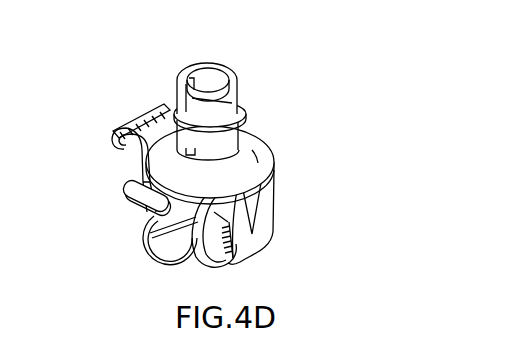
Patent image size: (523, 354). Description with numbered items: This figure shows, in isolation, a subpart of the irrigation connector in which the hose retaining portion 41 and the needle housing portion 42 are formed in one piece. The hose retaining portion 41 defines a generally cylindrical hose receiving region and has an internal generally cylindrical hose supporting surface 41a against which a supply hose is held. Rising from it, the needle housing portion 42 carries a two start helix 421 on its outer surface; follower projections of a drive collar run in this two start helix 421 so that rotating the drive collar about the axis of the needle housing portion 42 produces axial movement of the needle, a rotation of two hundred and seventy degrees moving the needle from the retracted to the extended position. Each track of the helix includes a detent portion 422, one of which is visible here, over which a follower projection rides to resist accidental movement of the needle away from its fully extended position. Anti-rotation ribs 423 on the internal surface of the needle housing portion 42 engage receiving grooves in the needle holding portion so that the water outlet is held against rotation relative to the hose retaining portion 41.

The hose retaining portion 41 is at (256, 152).
The hose supporting surface 41a is at (168, 246).
The needle housing portion 42 is at (238, 123).
The two start helix 421 is at (263, 95).
The detent portion 422 is at (263, 170).
The anti-rotation ribs 423 is at (185, 86).